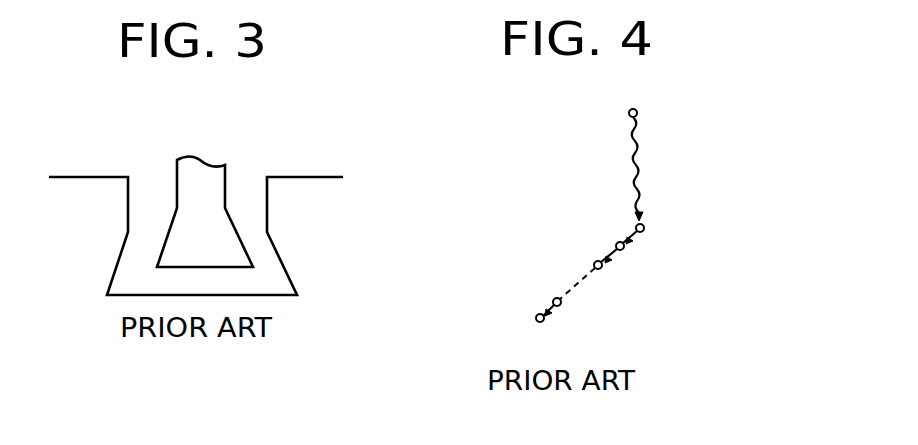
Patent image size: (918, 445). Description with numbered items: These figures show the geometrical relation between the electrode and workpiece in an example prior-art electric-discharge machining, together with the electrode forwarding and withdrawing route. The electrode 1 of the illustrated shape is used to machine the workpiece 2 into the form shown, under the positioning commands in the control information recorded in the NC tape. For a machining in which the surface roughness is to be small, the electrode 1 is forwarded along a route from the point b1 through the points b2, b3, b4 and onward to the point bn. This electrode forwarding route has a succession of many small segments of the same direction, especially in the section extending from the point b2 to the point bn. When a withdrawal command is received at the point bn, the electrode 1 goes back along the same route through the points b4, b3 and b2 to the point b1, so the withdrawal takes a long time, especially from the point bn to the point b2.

In FIG. 3, the electrode 1 is at (201, 173).
In FIG. 3, the workpiece 2 is at (298, 184).
In FIG. 4, the point b1 is at (629, 112).
In FIG. 4, the point b2 is at (637, 224).
In FIG. 4, the point b3 is at (617, 243).
In FIG. 4, the point b4 is at (594, 263).
In FIG. 4, the point bn is at (536, 319).